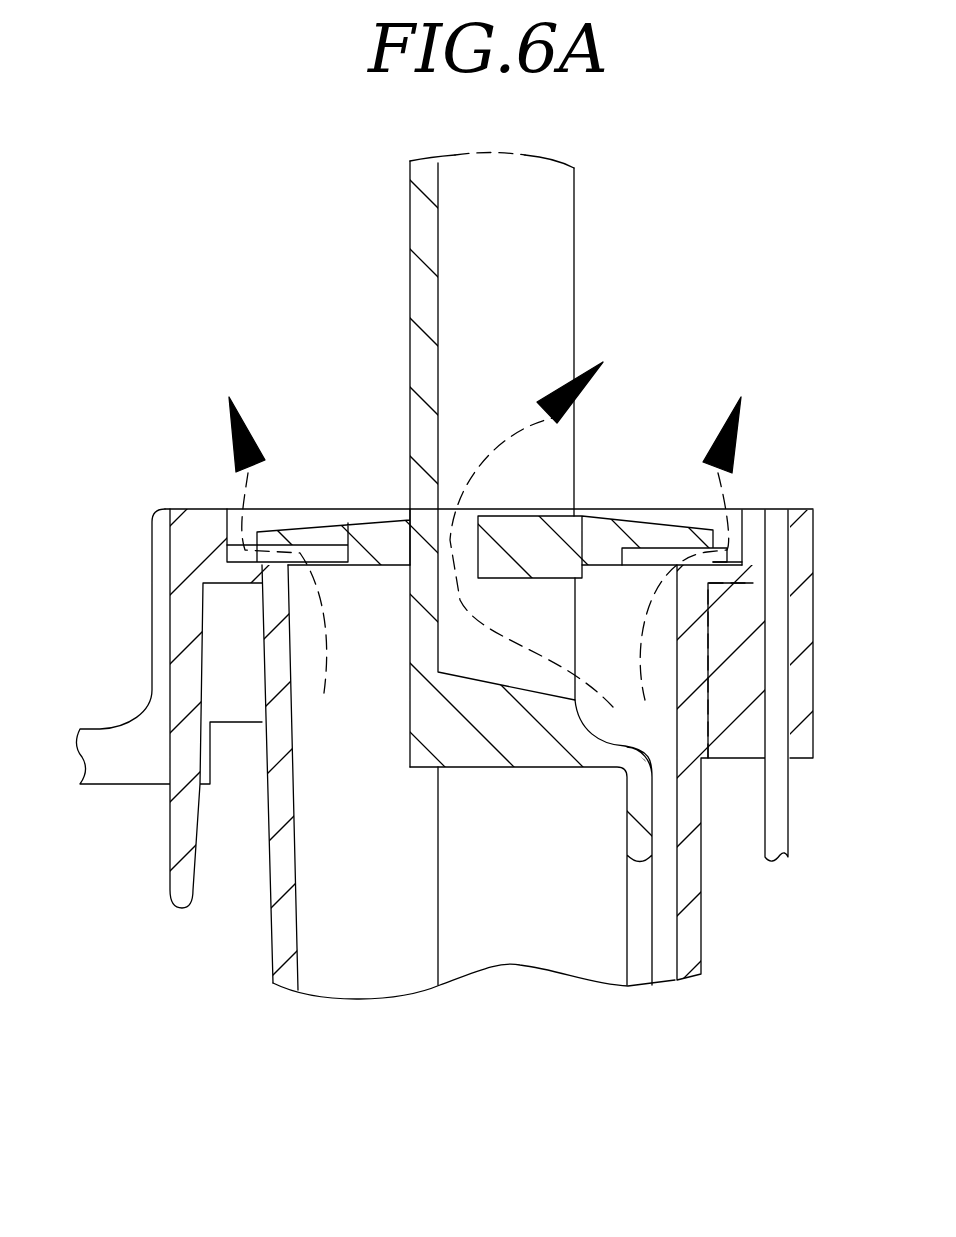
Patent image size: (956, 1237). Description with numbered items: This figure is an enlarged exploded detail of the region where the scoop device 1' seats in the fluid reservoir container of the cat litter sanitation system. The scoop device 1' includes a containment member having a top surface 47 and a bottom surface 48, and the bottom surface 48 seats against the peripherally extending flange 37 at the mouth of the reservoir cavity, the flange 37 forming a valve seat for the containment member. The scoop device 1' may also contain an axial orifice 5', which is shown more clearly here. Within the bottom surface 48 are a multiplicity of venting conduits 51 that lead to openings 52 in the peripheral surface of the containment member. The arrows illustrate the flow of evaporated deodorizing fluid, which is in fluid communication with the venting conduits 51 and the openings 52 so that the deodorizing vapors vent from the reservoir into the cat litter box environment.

The scoop device 1' is at (521, 460).
The axial orifice 5' is at (538, 534).
The peripherally extending flange 37 is at (240, 547).
The top surface 47 is at (325, 527).
The bottom surface 48 is at (370, 583).
The venting conduits 51 is at (270, 554).
The openings 52 is at (232, 545).